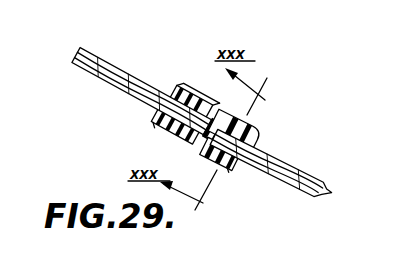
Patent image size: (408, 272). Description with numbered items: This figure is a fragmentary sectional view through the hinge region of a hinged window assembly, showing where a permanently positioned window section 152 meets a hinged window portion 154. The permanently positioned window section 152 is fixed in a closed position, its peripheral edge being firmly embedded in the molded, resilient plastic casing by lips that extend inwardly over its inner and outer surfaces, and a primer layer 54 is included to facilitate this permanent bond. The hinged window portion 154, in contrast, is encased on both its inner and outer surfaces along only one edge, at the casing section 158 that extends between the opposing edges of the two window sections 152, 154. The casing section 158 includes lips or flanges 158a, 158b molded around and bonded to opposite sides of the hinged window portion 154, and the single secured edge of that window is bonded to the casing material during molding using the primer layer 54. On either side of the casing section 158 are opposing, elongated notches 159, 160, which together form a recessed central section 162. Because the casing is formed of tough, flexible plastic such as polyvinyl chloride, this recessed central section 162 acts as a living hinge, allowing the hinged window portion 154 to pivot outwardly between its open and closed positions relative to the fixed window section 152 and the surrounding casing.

The permanently positioned window section 152 is at (268, 158).
The hinged window portion 154 is at (107, 27).
The casing section 158 is at (215, 105).
The lip 158a is at (172, 86).
The lip 158b is at (154, 118).
The elongated notch 159 is at (213, 120).
The elongated notch 160 is at (205, 145).
The recessed central section 162 is at (247, 115).
The primer layer 54 is at (160, 129).